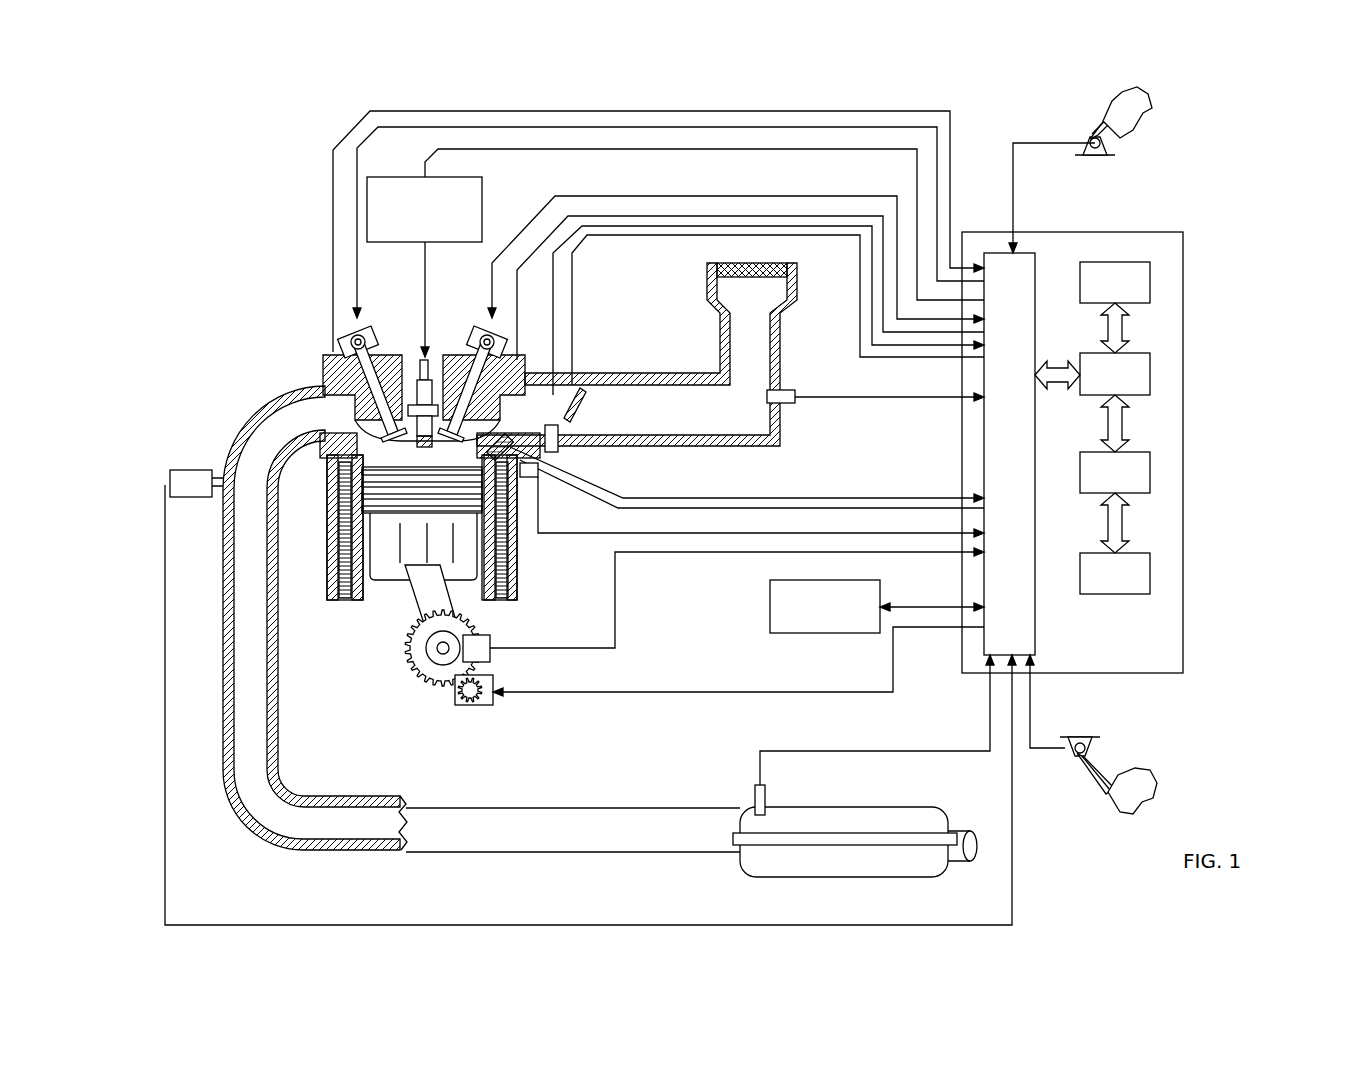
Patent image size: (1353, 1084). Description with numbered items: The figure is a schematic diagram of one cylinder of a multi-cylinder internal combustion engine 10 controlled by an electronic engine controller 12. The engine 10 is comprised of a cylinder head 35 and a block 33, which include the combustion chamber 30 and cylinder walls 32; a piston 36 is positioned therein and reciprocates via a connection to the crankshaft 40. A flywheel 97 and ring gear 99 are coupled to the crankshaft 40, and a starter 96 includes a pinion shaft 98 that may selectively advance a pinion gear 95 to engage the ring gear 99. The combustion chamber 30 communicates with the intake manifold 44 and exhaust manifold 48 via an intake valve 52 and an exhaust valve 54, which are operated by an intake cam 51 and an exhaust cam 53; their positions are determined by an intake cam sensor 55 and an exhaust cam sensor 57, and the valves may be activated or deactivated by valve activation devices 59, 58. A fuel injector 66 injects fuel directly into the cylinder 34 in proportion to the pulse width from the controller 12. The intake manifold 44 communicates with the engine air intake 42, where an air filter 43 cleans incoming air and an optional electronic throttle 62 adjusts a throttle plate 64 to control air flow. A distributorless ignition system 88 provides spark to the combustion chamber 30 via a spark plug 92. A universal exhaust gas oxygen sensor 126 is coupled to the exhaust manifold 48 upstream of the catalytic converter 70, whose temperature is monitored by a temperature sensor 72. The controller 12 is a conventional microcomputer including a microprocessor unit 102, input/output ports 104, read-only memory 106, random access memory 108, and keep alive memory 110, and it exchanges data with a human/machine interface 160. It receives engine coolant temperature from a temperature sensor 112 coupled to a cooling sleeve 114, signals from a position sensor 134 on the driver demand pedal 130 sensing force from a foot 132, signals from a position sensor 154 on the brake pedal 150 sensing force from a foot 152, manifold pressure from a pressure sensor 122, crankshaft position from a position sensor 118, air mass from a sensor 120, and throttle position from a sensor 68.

The internal combustion engine 10 is at (258, 304).
The electronic engine controller 12 is at (1183, 235).
The combustion chamber 30 is at (422, 452).
The cylinder walls 32 is at (360, 602).
The block 33 is at (318, 500).
The cylinder 34 is at (392, 603).
The cylinder head 35 is at (316, 354).
The piston 36 is at (410, 556).
The crankshaft 40 is at (428, 672).
The engine air intake 42 is at (697, 287).
The air filter 43 is at (768, 278).
The intake manifold 44 is at (546, 425).
The exhaust manifold 48 is at (307, 430).
The intake cam 51 is at (480, 333).
The intake valve 52 is at (470, 422).
The exhaust cam 53 is at (366, 333).
The exhaust valve 54 is at (335, 410).
The intake cam sensor 55 is at (500, 342).
The exhaust cam sensor 57 is at (346, 338).
The valve activation device 58 is at (370, 341).
The valve activation device 59 is at (476, 349).
The electronic throttle 62 is at (576, 408).
The throttle plate 64 is at (560, 428).
The fuel injector 66 is at (518, 460).
The throttle position sensor 68 is at (560, 390).
The catalytic converter 70 is at (776, 808).
The temperature sensor 72 is at (766, 788).
The distributorless ignition system 88 is at (382, 177).
The spark plug 92 is at (428, 358).
The pinion gear 95 is at (480, 703).
The starter 96 is at (493, 703).
The flywheel 97 is at (420, 656).
The pinion shaft 98 is at (466, 698).
The ring gear 99 is at (447, 683).
The microprocessor unit 102 is at (1150, 376).
The input/output ports 104 is at (1036, 262).
The read-only memory 106 is at (1150, 280).
The random access memory 108 is at (1150, 474).
The keep alive memory 110 is at (1150, 573).
The temperature sensor 112 is at (752, 500).
The cooling sleeve 114 is at (510, 555).
The position sensor 118 is at (488, 636).
The air mass sensor 120 is at (788, 390).
The pressure sensor 122 is at (560, 448).
The universal exhaust gas oxygen sensor 126 is at (170, 474).
The driver demand pedal 130 is at (1078, 124).
The foot 132 is at (1142, 101).
The position sensor 134 is at (1101, 145).
The brake pedal 150 is at (1102, 790).
The foot 152 is at (1134, 770).
The position sensor 154 is at (1068, 740).
The human/machine interface 160 is at (877, 606).